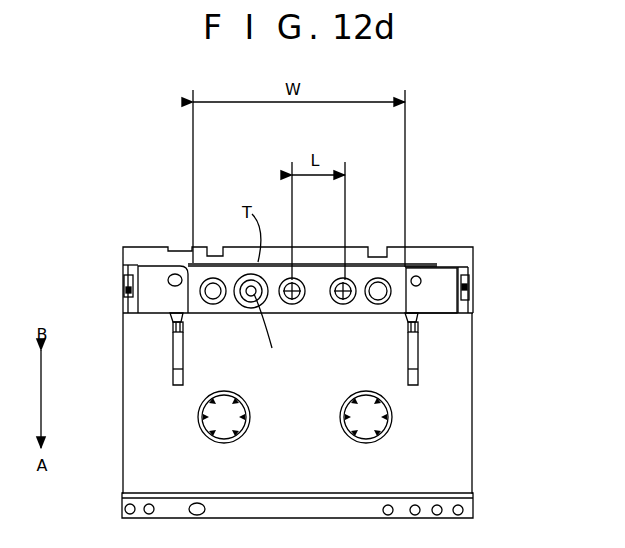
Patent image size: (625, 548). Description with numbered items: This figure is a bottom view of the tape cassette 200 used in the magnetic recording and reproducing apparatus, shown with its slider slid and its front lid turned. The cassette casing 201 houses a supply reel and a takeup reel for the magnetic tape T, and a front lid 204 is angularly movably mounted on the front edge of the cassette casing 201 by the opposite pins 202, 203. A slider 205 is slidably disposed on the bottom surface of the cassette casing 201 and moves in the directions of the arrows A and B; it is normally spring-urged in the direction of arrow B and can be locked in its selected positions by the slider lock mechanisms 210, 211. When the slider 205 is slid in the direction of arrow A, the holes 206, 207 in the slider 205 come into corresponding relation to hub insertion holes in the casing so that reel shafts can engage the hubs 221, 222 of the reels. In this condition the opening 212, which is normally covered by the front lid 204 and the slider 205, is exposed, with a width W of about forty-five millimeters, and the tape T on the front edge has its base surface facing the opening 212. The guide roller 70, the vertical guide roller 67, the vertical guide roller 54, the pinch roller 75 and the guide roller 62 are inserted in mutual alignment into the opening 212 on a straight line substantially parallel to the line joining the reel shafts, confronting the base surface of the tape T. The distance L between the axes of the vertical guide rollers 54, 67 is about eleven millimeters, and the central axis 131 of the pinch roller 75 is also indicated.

The tape cassette 200 is at (122, 226).
The front lid 204 is at (122, 258).
The pin 202 is at (123, 291).
The cassette casing 201 is at (158, 302).
The pin 203 is at (473, 291).
The opening 212 is at (367, 280).
The slider 205 is at (472, 362).
The slider lock mechanism 210 is at (176, 328).
The slider lock mechanism 211 is at (417, 328).
The guide roller 62 is at (213, 305).
The pinch roller 75 is at (248, 309).
The central axis 131 is at (273, 332).
The vertical guide roller 54 is at (291, 305).
The vertical guide roller 67 is at (343, 305).
The guide roller 70 is at (377, 305).
The hole 207 is at (205, 428).
The hub 222 is at (237, 436).
The hub 221 is at (352, 431).
The hole 206 is at (380, 430).